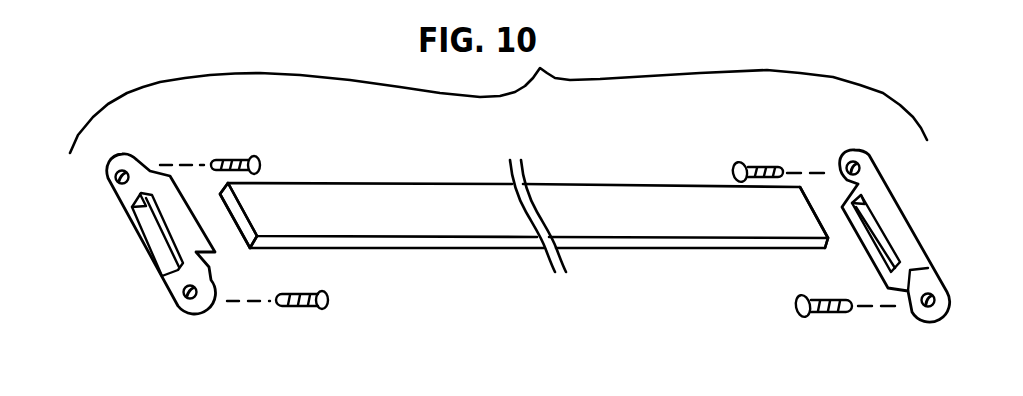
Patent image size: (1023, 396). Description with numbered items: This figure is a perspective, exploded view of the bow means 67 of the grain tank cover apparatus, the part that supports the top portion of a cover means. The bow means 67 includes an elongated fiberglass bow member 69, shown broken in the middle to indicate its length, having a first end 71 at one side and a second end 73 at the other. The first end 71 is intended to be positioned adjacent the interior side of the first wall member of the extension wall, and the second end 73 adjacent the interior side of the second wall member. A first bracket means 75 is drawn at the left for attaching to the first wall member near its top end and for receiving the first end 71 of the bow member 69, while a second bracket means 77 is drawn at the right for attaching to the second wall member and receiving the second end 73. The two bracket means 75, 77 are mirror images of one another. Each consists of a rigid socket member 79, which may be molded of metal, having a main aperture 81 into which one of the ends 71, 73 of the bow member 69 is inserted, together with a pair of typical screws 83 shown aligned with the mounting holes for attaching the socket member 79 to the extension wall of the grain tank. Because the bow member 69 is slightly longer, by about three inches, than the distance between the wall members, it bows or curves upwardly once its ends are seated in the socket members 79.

The bow means 67 is at (936, 217).
The bow member 69 is at (652, 228).
The first end 71 is at (312, 227).
The second end 73 is at (780, 233).
The first bracket means 75 is at (157, 254).
The second bracket means 77 is at (886, 202).
The socket member 79 is at (165, 277).
The main aperture 81 is at (150, 236).
The screws 83 is at (231, 157).